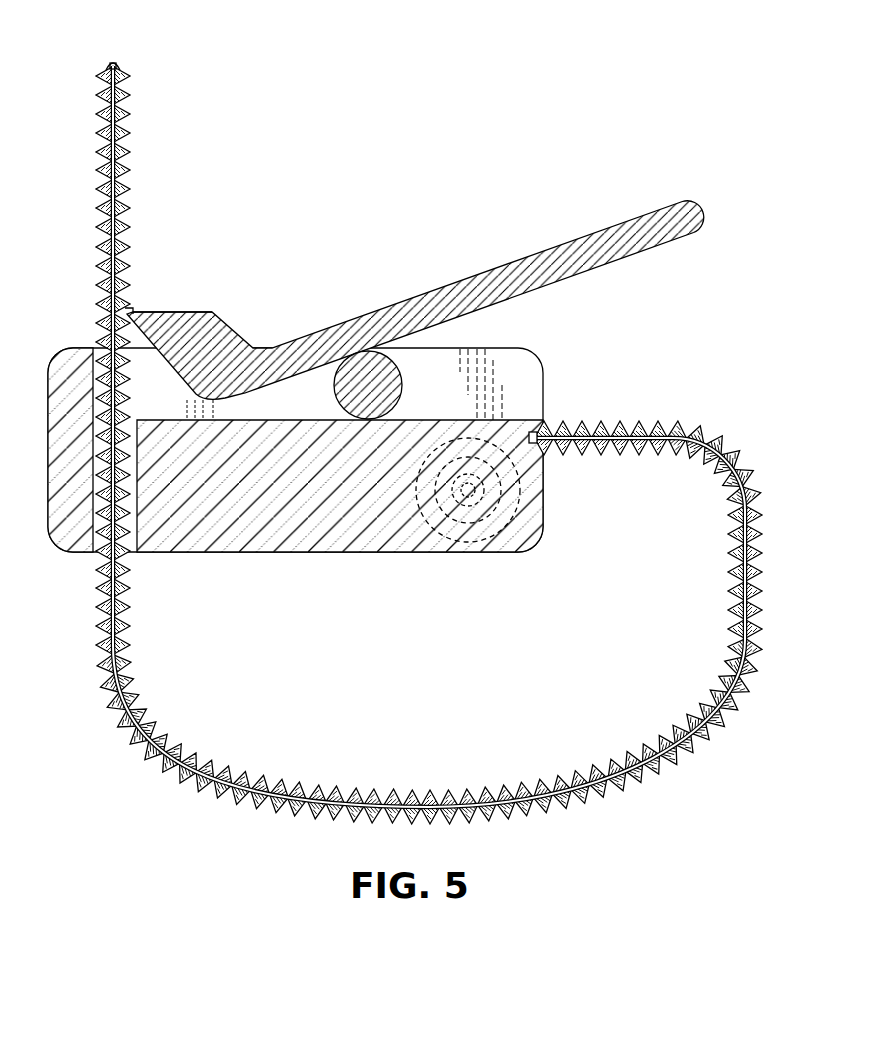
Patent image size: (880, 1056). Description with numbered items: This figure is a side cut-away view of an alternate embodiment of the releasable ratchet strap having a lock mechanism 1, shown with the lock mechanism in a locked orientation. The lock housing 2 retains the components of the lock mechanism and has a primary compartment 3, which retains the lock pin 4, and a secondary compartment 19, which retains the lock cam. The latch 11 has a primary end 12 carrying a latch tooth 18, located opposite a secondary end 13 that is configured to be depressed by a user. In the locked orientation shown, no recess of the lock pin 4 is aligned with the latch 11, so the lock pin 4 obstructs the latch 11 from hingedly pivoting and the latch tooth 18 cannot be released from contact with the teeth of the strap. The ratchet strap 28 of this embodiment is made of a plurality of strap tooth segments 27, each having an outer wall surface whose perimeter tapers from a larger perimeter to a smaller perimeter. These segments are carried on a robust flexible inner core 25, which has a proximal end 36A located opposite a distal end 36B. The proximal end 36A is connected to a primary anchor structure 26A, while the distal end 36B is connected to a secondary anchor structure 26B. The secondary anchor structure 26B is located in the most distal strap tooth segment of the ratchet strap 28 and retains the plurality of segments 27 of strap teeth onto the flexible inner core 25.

The releasable ratchet strap having a lock mechanism 1 is at (325, 166).
The lock housing 2 is at (290, 540).
The primary compartment 3 is at (402, 358).
The lock pin 4 is at (368, 367).
The latch 11 is at (414, 286).
The primary end 12 is at (414, 310).
The secondary end 13 is at (660, 212).
The latch tooth 18 is at (137, 310).
The secondary compartment 19 is at (520, 495).
The flexible inner core 25 is at (429, 748).
The primary anchor structure 26A is at (537, 420).
The secondary anchor structure 26B is at (113, 63).
The strap tooth segments 27 is at (126, 308).
The ratchet strap 28 is at (660, 778).
The proximal end 36A is at (548, 452).
The distal end 36B is at (118, 78).